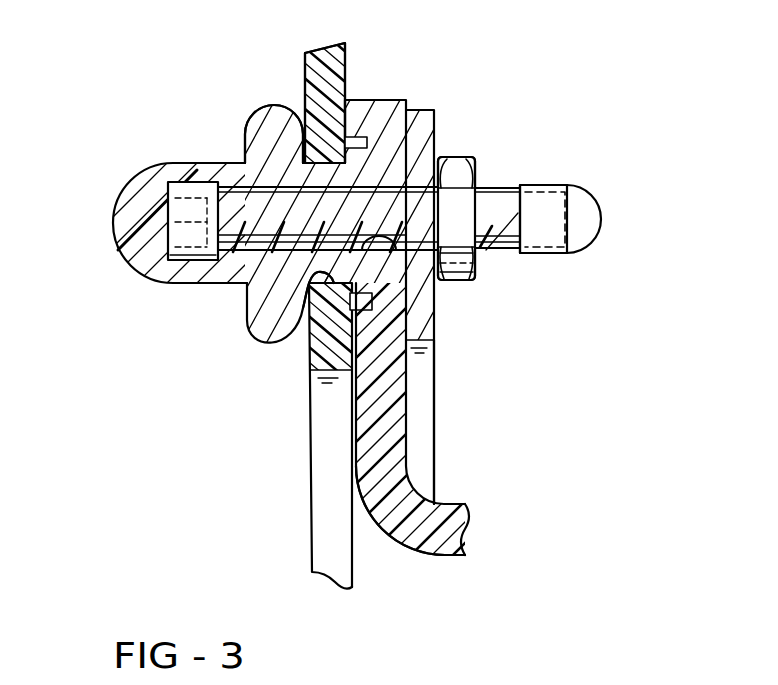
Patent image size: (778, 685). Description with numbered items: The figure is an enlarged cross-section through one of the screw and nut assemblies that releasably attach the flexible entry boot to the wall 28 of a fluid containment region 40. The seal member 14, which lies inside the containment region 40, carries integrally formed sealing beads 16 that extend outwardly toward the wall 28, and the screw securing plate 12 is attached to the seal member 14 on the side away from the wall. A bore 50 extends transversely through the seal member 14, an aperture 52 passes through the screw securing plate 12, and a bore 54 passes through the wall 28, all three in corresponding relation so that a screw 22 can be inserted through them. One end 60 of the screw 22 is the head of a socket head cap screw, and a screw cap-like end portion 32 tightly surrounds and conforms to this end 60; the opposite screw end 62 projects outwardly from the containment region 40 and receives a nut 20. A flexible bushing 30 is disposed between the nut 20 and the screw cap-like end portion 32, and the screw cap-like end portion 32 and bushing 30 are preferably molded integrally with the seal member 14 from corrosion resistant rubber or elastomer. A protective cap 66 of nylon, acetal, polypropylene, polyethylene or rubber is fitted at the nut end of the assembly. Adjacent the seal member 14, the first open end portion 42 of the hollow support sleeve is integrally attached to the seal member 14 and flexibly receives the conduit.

The screw securing plate 12 is at (430, 109).
The seal member 14 is at (388, 100).
The sealing beads 16 is at (349, 110).
The nut 20 is at (475, 163).
The screw 22 is at (243, 187).
The wall 28 is at (322, 50).
The flexible bushing 30 is at (262, 343).
The screw cap-like end portion 32 is at (115, 229).
The fluid containment region 40 is at (570, 364).
The first open end portion 42 is at (415, 562).
The bore 50 is at (435, 262).
The aperture 52 is at (442, 190).
The bore 54 is at (302, 295).
The screw end 60 is at (190, 262).
The screw end 62 is at (557, 187).
The protective cap 66 is at (605, 220).